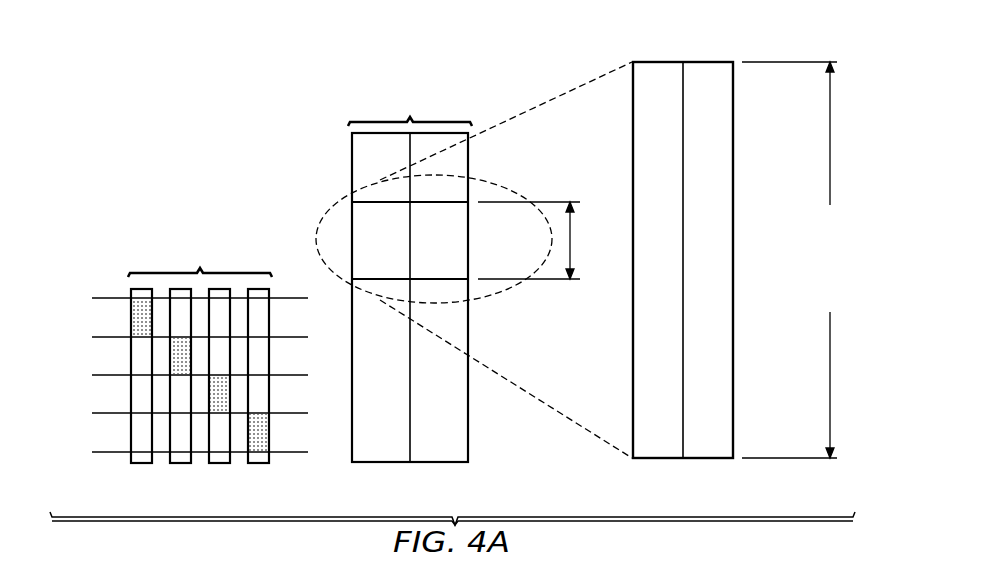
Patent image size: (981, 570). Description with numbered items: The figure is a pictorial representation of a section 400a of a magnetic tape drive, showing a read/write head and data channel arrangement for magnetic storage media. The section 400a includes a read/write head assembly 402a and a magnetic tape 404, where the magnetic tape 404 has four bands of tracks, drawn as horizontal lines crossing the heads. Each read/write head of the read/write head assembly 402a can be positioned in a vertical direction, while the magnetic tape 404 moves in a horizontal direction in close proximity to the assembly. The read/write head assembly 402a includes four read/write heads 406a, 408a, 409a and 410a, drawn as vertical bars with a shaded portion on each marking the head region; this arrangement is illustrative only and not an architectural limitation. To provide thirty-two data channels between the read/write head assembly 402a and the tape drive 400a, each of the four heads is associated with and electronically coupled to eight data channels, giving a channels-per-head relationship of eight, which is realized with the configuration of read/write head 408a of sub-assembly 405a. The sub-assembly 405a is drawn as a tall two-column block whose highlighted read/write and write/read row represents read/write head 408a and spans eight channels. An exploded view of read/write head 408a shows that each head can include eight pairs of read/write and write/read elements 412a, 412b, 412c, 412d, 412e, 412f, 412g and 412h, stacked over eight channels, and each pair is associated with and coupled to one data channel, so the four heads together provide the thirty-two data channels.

The section of magnetic tape drive 400a is at (258, 97).
The read/write head assembly 402a is at (200, 353).
The magnetic tape 404 is at (282, 297).
The sub-assembly 405a is at (178, 465).
The read/write head 406a is at (133, 321).
The read/write head 408a is at (175, 348).
The read/write head 409a is at (224, 384).
The read/write head 410a is at (264, 429).
The pair of read/write and write/read elements 412a is at (733, 92).
The pair of read/write and write/read elements 412b is at (733, 140).
The pair of read/write and write/read elements 412c is at (733, 189).
The pair of read/write and write/read elements 412d is at (733, 238).
The pair of read/write and write/read elements 412e is at (733, 286).
The pair of read/write and write/read elements 412f is at (733, 334).
The pair of read/write and write/read elements 412g is at (733, 383).
The pair of read/write and write/read elements 412h is at (733, 433).